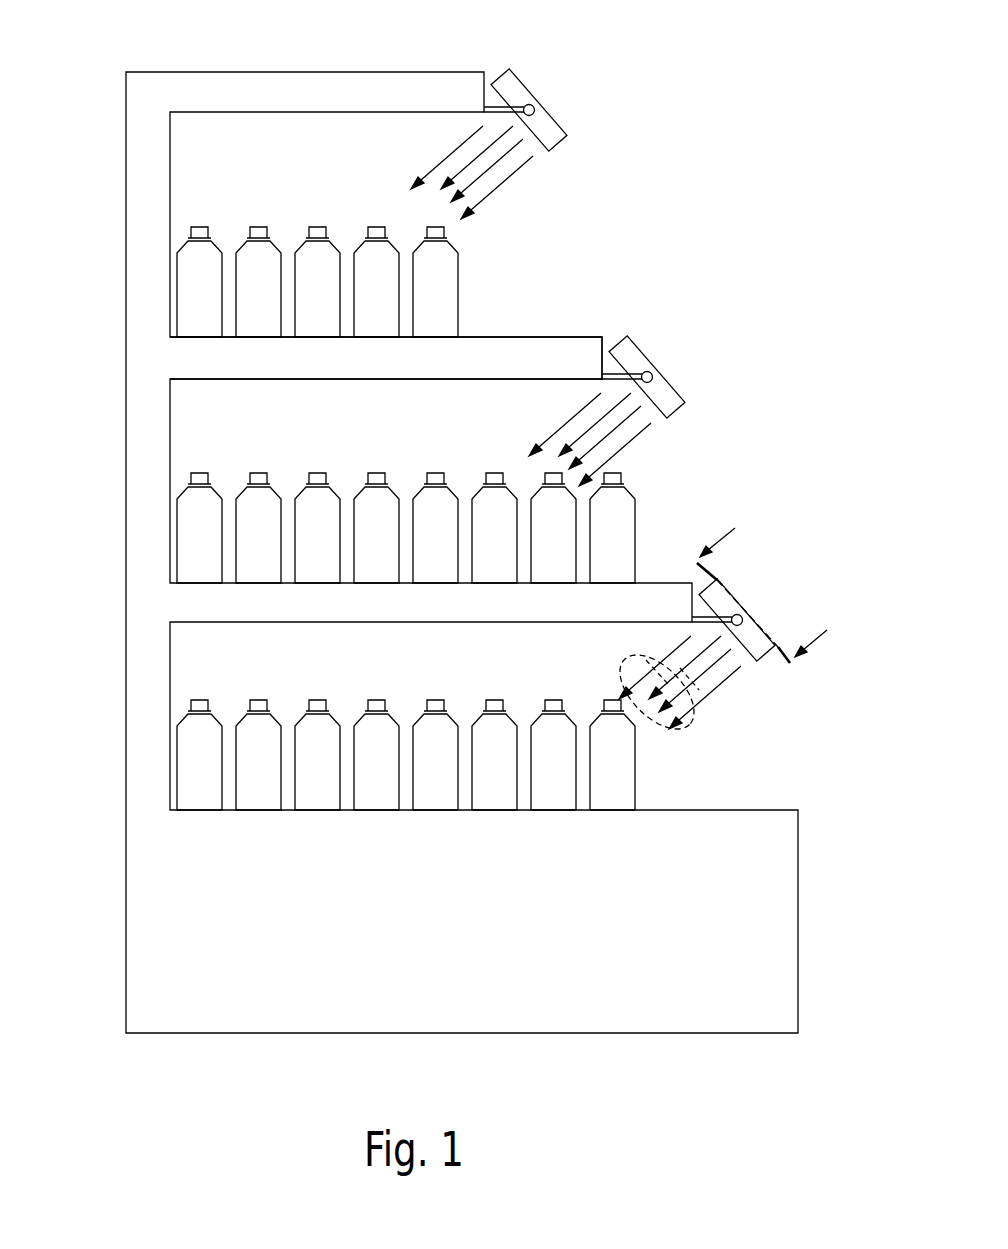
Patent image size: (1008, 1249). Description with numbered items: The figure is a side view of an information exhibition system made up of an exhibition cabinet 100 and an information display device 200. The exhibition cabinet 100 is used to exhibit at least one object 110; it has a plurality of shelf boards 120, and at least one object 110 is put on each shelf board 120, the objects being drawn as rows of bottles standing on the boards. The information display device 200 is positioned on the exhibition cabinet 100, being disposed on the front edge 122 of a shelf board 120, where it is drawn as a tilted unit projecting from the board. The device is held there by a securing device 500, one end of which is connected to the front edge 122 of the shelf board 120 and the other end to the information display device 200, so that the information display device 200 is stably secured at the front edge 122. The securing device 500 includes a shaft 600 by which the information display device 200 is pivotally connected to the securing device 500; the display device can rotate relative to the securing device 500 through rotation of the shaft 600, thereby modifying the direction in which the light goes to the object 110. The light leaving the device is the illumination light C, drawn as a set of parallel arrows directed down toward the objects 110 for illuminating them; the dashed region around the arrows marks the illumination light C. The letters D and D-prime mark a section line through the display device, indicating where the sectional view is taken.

The exhibition cabinet 100 is at (137, 128).
The object 110 is at (448, 272).
The shelf board 120 is at (580, 348).
The front edge 122 is at (608, 343).
The information display device 200 is at (760, 653).
The securing device 500 is at (502, 105).
The shaft 600 is at (536, 113).
The section line D-D' D is at (777, 585).
The illumination light C is at (688, 728).